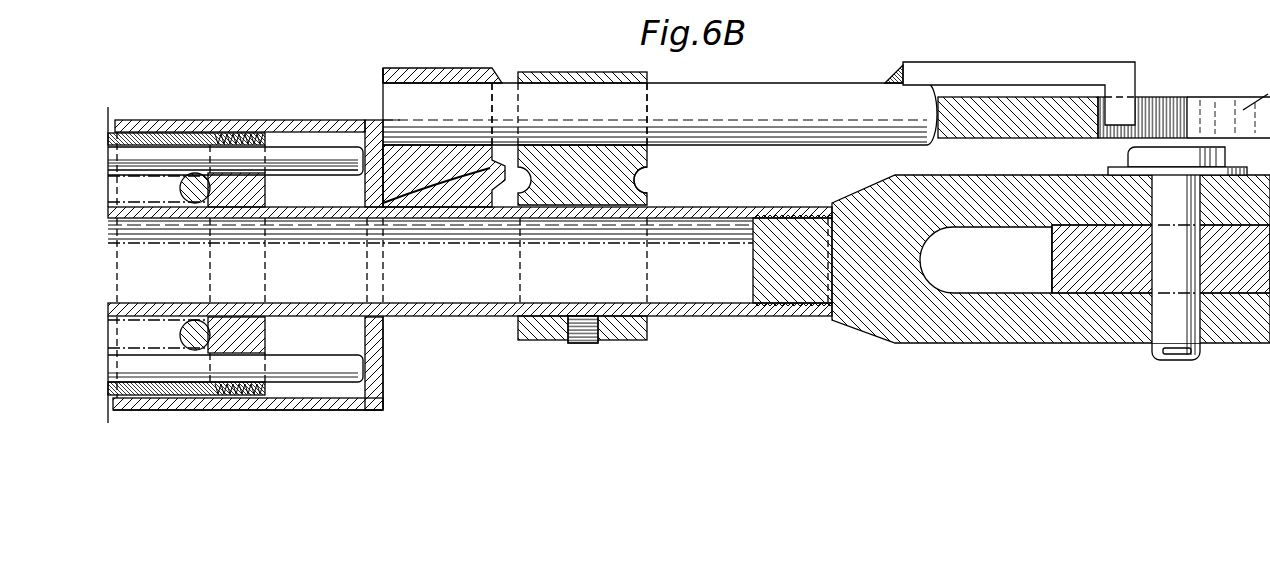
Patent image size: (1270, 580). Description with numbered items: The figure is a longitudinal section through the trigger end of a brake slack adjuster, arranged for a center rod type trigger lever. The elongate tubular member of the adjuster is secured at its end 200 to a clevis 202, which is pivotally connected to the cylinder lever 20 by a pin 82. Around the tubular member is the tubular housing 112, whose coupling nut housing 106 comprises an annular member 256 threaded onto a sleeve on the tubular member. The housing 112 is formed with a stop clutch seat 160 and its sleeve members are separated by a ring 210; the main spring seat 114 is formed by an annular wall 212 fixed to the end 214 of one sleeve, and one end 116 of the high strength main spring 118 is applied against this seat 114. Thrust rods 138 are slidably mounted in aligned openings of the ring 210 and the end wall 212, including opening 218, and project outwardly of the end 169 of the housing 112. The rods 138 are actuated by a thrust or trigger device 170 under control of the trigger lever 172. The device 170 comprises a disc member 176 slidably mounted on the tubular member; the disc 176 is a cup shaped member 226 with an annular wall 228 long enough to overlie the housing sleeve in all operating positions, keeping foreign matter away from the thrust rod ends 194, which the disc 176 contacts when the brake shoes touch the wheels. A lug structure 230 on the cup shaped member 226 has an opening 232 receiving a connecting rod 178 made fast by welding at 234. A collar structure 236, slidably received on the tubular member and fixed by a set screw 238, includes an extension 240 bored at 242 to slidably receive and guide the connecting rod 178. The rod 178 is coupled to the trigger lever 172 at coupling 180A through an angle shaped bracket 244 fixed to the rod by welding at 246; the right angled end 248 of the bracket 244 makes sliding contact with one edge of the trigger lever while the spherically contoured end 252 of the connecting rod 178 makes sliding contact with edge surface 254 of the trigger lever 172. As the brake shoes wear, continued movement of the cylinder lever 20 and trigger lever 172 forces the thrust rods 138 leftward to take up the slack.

The cylinder lever 20 is at (1105, 277).
The pin 82 is at (1167, 312).
The coupling nut housing 106 is at (579, 0).
The tubular housing 112 is at (180, 397).
The spring seat 114 is at (208, 180).
The spring end 116 is at (183, 178).
The main spring 118 is at (130, 337).
The thrust rods 138 is at (127, 152).
The stop clutch seat 160 is at (470, 158).
The housing end 169 is at (217, 132).
The trigger device 170 is at (668, 82).
The trigger lever 172 is at (1186, 99).
The disc member 176 is at (385, 344).
The connecting rod 178 is at (650, 176).
The coupling 180A is at (1140, 65).
The thrust rod ends 194 is at (397, 150).
The tubular member end 200 is at (810, 318).
The clevis 202 is at (920, 327).
The ring 210 is at (511, 72).
The annular wall 212 is at (220, 347).
The sleeve end 214 is at (255, 395).
The opening 218 is at (249, 152).
The cup shaped member 226 is at (365, 410).
The annular wall 228 is at (293, 405).
The lug structure 230 is at (446, 72).
The opening 232 is at (396, 92).
The welding 234 is at (505, 165).
The collar structure 236 is at (632, 340).
The set screw 238 is at (576, 344).
The extension 240 is at (530, 73).
The bore 242 is at (578, 88).
The angle shaped bracket 244 is at (992, 72).
The welding 246 is at (892, 66).
The right angled end 248 is at (1122, 112).
The spherically contoured end 252 is at (925, 122).
The edge surface 254 is at (932, 112).
The annular member 256 is at (501, 60).